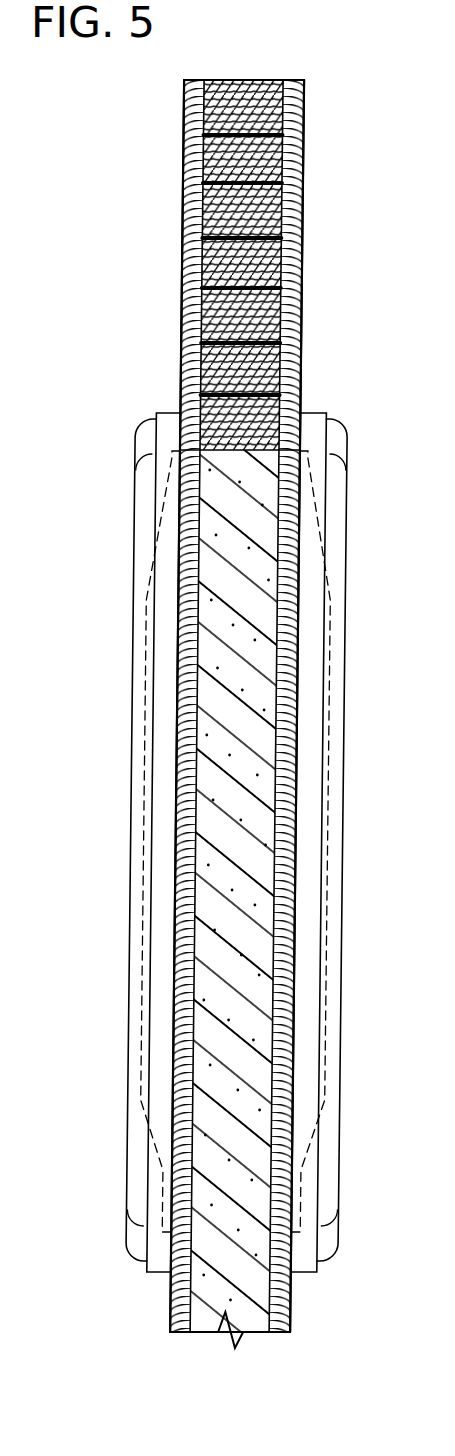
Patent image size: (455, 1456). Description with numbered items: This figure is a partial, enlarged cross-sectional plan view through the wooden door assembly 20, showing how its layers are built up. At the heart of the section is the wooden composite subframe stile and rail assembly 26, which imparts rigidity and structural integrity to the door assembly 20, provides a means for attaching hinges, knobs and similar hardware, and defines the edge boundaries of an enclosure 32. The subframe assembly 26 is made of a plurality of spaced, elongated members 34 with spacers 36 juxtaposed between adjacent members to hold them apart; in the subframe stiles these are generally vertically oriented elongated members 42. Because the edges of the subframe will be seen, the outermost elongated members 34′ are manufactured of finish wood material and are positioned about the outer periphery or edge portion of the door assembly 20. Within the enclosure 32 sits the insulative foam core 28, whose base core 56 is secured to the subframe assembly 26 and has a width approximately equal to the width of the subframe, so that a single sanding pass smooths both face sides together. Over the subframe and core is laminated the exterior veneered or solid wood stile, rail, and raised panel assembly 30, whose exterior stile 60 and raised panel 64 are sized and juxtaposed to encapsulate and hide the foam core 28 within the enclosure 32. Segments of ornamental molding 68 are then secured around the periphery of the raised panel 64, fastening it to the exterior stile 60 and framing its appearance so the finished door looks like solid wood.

The wooden door assembly 20 is at (339, 89).
The subframe stile and rail assembly 26 is at (223, 81).
The elongated members of finish wood material 34′ is at (274, 81).
The elongated members 34 is at (185, 118).
The vertically oriented elongated members 42 is at (305, 118).
The spacers 36 is at (185, 242).
The exterior stile 60 is at (186, 270).
The exterior stile, rail, and raised panel assembly 30 is at (186, 306).
The enclosure 32 is at (298, 992).
The base core 56 is at (212, 1030).
The insulative foam core 28 is at (268, 1065).
The ornamental molding 68 is at (153, 418).
The raised panel 64 is at (153, 921).